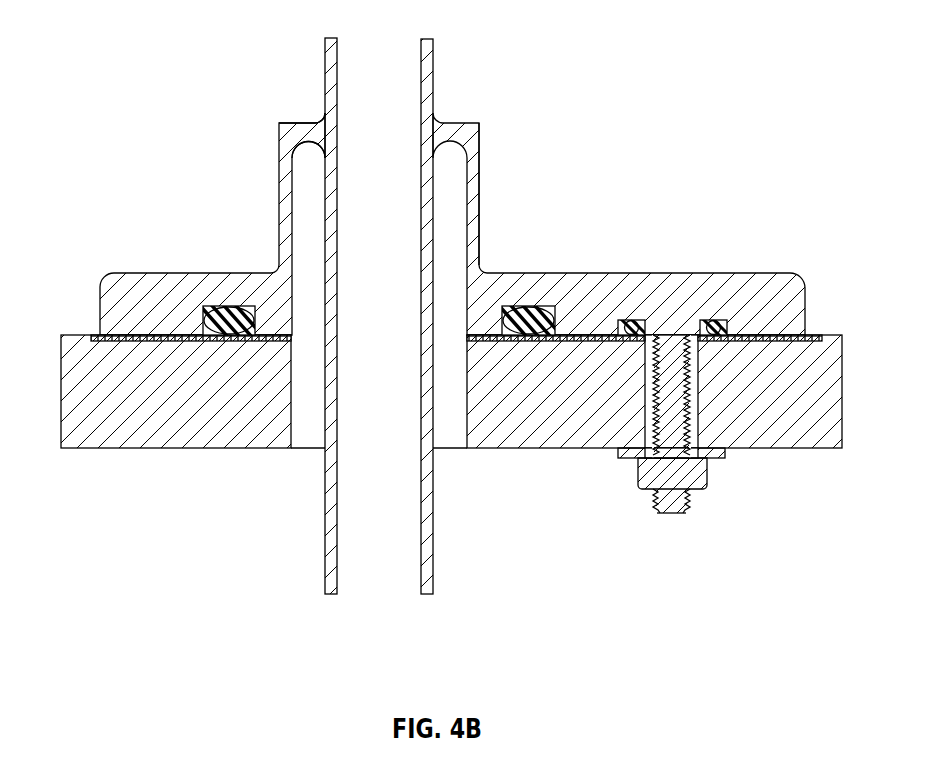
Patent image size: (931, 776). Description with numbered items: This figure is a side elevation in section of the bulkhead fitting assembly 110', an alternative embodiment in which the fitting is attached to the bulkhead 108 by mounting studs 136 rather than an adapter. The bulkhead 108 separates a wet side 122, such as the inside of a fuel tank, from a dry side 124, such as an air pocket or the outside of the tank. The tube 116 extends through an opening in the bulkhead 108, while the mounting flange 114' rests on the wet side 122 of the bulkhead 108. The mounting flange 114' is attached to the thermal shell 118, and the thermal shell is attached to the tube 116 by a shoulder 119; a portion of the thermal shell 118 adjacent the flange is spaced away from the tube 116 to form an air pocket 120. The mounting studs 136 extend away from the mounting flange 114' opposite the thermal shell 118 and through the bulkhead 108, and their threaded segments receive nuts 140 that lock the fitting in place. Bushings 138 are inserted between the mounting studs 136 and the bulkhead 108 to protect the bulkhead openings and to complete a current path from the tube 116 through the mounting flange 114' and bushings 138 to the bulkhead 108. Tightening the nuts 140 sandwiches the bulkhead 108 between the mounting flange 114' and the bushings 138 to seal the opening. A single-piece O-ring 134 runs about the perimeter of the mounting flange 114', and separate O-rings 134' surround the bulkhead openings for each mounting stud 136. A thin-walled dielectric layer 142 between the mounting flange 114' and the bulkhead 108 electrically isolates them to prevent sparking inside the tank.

The bulkhead fitting assembly 110' is at (191, 31).
The shoulder 119 is at (313, 122).
The O-ring 134 is at (376, 287).
The thin-walled dielectric layer 142 is at (98, 337).
The air pocket 120 is at (306, 436).
The tube 116 is at (433, 552).
The thermal shell 118 is at (479, 185).
The wet side 122 is at (668, 167).
The mounting flange 114' is at (452, 224).
The O-rings 134' is at (676, 287).
The bulkhead 108 is at (825, 335).
The bushings 138 is at (725, 455).
The nuts 140 is at (707, 480).
The mounting studs 136 is at (690, 505).
The dry side 124 is at (607, 538).